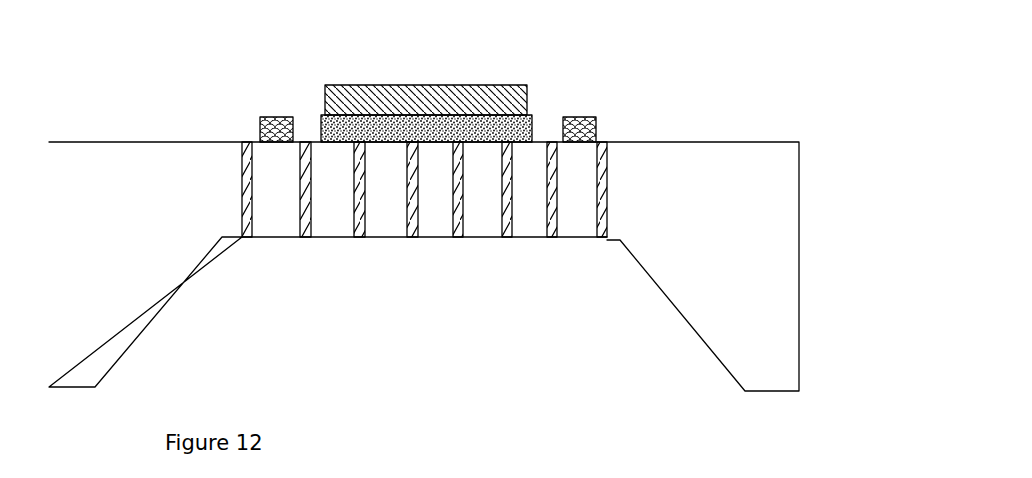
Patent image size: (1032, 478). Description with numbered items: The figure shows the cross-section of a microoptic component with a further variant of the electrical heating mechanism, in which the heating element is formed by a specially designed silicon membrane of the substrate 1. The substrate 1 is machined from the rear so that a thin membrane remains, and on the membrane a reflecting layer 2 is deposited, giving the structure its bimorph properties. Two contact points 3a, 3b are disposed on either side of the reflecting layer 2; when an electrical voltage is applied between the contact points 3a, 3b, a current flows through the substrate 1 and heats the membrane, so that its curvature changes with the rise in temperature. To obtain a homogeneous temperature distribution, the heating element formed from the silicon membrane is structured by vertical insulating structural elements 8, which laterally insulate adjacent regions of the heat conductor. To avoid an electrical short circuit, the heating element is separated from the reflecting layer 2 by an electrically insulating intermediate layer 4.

The substrate 1 is at (725, 225).
The reflecting layer 2 is at (440, 88).
The contact point 3a is at (275, 117).
The contact point 3b is at (590, 118).
The electrically insulating intermediate layer 4 is at (533, 122).
The vertical insulating structural elements 8 is at (607, 142).